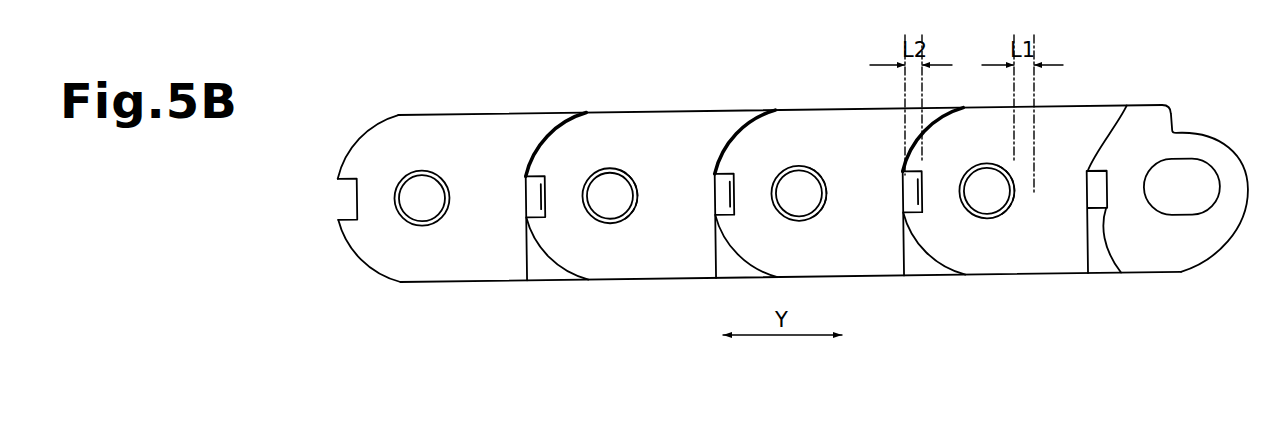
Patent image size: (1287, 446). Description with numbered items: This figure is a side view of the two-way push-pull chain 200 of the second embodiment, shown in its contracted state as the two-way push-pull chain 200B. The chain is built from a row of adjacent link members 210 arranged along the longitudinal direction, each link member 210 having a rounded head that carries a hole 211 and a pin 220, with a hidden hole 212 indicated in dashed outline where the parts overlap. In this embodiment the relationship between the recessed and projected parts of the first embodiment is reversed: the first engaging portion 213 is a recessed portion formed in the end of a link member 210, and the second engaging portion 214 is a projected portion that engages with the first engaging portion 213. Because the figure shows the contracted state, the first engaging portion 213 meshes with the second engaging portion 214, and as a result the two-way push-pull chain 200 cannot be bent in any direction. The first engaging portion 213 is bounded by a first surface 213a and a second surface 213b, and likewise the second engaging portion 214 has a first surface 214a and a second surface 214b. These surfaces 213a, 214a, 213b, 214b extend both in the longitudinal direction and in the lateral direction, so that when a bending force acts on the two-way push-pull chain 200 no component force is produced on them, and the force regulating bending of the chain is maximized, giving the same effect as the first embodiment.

The two-way push-pull chain 200 is at (497, 92).
The two-way push-pull chain in contracted state 200B is at (750, 175).
The link member 210 is at (720, 125).
The connecting hole 211 is at (409, 222).
The connecting hole (hidden / end link) 212 is at (650, 216).
The first engaging portion 213 is at (351, 200).
The first surface of first engaging portion 213a is at (343, 181).
The second surface of first engaging portion 213b is at (343, 217).
The second engaging portion 214 is at (1088, 188).
The first surface of second engaging portion 214a is at (1091, 168).
The second surface of second engaging portion 214b is at (1120, 273).
The connecting pin 220 is at (438, 204).